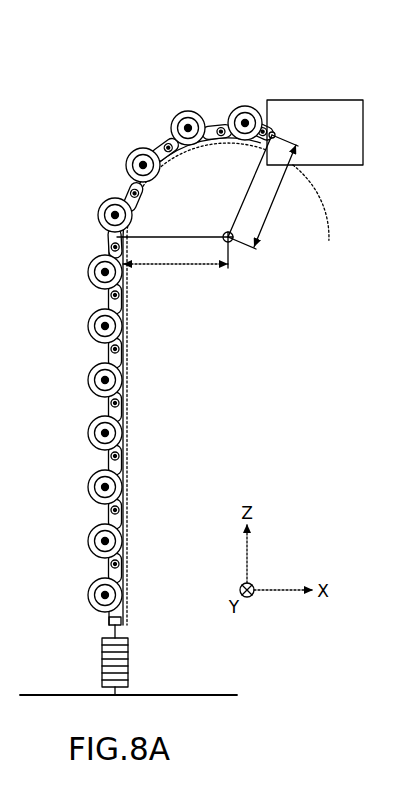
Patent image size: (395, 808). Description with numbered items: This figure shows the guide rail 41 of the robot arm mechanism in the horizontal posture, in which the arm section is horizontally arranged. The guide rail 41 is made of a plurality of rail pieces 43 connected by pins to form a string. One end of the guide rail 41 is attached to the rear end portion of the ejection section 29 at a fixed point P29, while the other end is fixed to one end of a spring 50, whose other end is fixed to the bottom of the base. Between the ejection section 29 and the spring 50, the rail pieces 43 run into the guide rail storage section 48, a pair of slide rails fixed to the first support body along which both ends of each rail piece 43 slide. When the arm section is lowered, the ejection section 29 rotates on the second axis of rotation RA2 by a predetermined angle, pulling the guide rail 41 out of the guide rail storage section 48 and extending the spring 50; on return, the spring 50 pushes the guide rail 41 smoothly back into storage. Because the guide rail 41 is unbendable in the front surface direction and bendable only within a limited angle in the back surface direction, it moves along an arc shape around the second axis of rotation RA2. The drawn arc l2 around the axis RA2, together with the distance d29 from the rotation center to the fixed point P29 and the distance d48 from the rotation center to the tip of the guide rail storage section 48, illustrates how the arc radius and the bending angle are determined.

The guide rail 41 is at (103, 130).
The rail piece 43 is at (88, 432).
The guide rail storage section 48 is at (125, 440).
The ejection section 29 is at (338, 98).
The fixed point of the guide rail in the ejection section P29 is at (268, 131).
The second axis of rotation RA2 is at (233, 243).
The distance d29 is at (269, 192).
The distance d48 is at (175, 276).
The locus l2 is at (320, 199).
The spring 50 is at (102, 658).